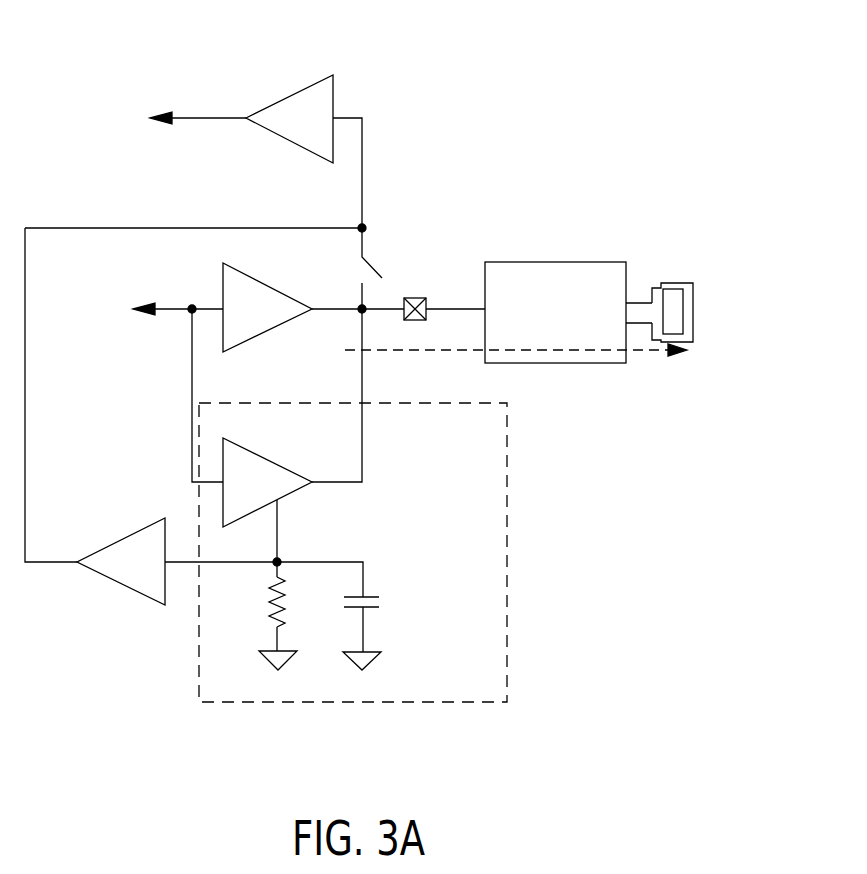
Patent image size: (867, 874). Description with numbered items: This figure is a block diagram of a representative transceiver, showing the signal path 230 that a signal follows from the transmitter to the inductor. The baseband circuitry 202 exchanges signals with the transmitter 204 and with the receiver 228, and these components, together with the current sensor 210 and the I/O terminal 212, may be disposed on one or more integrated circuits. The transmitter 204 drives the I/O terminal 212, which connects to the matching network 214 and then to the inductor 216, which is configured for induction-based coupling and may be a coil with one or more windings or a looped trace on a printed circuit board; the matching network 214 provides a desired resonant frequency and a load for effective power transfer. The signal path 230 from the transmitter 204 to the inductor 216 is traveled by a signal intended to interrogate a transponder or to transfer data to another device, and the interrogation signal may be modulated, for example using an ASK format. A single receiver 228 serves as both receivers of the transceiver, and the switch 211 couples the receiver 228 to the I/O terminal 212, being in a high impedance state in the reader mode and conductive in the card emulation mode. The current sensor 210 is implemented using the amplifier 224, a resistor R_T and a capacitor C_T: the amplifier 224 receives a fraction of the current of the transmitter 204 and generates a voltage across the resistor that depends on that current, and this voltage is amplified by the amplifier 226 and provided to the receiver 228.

The baseband circuitry 202 is at (151, 206).
The transmitter 204 is at (243, 270).
The current sensor 210 is at (470, 717).
The switch 211 is at (373, 265).
The I/O terminal 212 is at (418, 296).
The matching network 214 is at (585, 261).
The inductor 216 is at (693, 310).
The amplifier 224 is at (290, 493).
The amplifier 226 is at (125, 587).
The receiver 228 is at (298, 88).
The signal path 230 is at (633, 353).